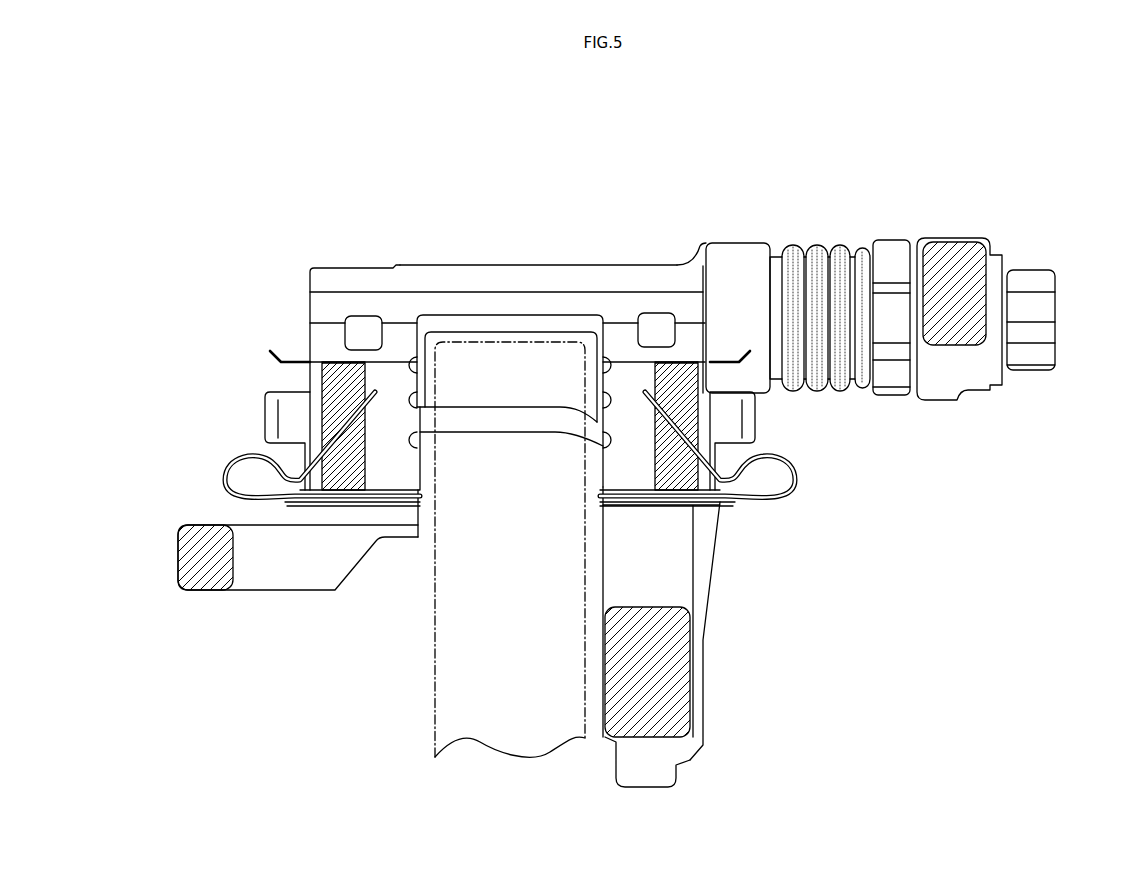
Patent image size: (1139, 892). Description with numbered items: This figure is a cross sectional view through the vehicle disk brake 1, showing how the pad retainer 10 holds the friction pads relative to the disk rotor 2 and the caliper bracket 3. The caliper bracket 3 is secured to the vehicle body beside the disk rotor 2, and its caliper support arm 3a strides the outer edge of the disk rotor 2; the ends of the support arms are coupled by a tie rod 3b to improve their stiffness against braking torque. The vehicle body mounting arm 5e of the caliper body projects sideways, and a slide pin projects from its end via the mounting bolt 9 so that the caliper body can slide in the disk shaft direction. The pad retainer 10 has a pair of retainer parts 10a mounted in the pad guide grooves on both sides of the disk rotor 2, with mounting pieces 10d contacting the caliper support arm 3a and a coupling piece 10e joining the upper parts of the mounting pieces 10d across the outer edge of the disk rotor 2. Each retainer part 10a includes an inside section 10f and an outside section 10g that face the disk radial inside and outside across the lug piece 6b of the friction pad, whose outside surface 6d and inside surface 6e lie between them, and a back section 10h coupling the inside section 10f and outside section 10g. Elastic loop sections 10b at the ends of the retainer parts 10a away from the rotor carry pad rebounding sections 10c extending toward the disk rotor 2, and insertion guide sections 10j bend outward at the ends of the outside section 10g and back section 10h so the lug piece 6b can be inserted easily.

The disk brake 1 is at (598, 181).
The disk rotor 2 is at (442, 665).
The caliper bracket 3 is at (705, 651).
The caliper support arm 3a is at (737, 250).
The tie rod 3b is at (213, 590).
The vehicle body mounting arm 5e is at (955, 246).
The lug piece 6b is at (322, 385).
The outside surface 6d is at (340, 360).
The inside surface 6e is at (338, 502).
The mounting bolt 9 is at (1048, 315).
The pad retainer 10 is at (370, 266).
The retainer part 10a is at (418, 467).
The elastic loop section 10b is at (226, 486).
The pad rebounding section 10c is at (392, 486).
The mounting piece 10d is at (332, 324).
The coupling piece 10e is at (503, 266).
The inside section 10f is at (388, 506).
The outside section 10g is at (421, 373).
The back section 10h is at (424, 411).
The insertion guide section 10j is at (268, 355).